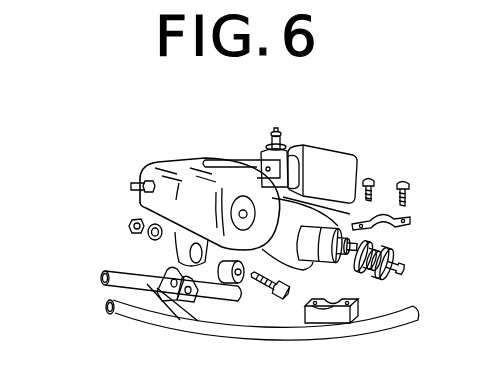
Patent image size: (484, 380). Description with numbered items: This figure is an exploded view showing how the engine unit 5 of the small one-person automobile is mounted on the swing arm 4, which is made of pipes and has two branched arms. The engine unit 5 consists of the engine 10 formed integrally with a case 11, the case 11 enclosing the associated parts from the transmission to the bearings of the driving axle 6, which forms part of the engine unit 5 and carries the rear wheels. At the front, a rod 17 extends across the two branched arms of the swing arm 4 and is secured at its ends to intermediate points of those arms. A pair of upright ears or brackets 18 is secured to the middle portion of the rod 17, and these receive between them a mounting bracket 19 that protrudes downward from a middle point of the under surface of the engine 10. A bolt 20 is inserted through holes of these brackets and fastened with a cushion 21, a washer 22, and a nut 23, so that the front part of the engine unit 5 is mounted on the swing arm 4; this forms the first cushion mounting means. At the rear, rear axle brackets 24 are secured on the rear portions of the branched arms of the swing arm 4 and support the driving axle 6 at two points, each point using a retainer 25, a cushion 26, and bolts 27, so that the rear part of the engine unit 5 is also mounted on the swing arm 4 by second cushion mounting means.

The swing arm 4 is at (104, 305).
The engine unit 5 is at (345, 143).
The driving axle 6 is at (350, 262).
The engine 10 is at (179, 166).
The case 11 is at (303, 266).
The rod 17 is at (151, 293).
The upright ears or brackets 18 is at (185, 294).
The mounting bracket 19 is at (176, 249).
The bolt 20 is at (268, 326).
The cushion 21 is at (222, 318).
The washer 22 is at (144, 234).
The nut 23 is at (129, 223).
The rear axle brackets 24 is at (335, 318).
The retainer 25 is at (408, 221).
The cushion 26 is at (392, 253).
The bolts 27 is at (402, 180).